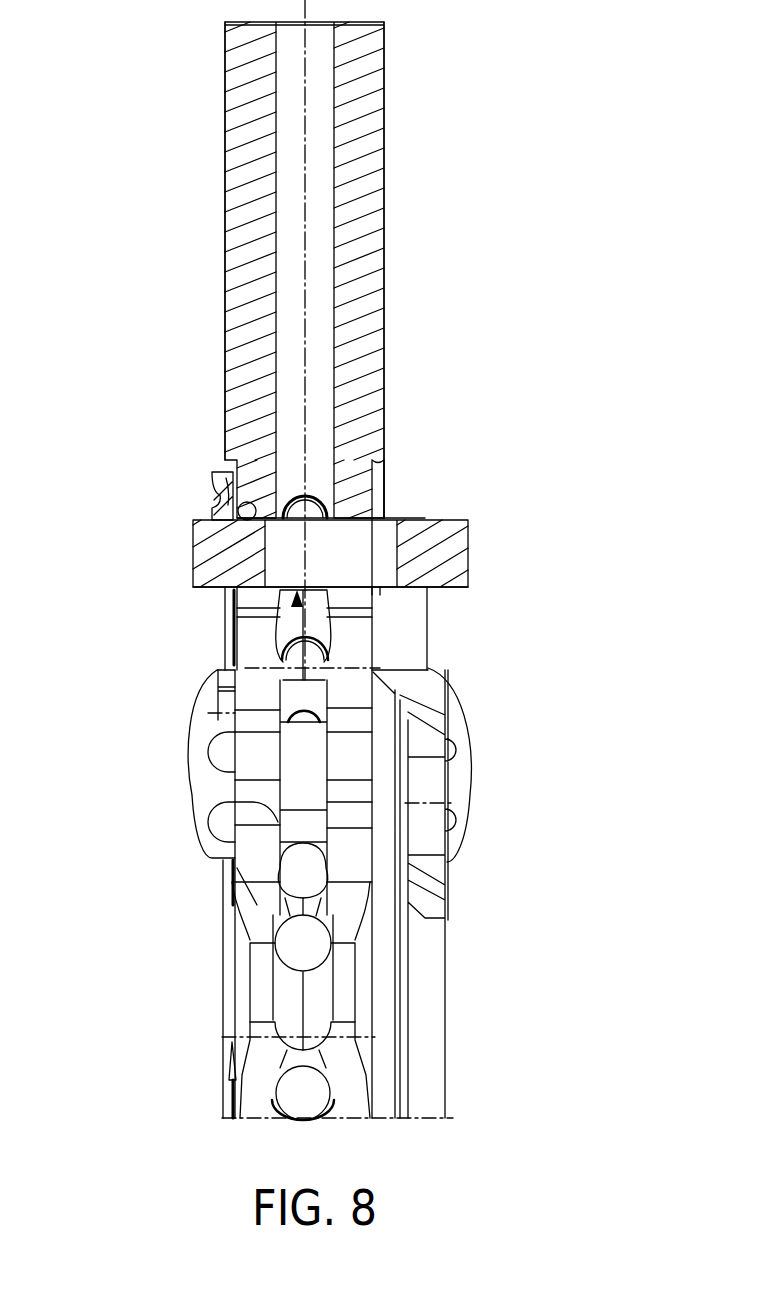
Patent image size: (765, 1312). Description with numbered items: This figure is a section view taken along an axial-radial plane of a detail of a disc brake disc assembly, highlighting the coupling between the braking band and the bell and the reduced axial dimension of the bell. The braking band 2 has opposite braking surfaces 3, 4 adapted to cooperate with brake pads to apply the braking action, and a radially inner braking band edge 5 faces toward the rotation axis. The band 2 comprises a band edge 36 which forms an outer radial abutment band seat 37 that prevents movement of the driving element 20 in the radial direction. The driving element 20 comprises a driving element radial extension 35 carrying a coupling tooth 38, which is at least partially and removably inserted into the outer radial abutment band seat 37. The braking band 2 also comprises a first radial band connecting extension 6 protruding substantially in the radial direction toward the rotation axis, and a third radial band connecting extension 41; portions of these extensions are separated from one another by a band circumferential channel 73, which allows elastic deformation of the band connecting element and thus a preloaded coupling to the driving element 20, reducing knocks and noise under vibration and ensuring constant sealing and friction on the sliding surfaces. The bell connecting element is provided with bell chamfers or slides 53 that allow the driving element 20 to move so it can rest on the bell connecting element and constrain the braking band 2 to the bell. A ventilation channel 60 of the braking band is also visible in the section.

The braking band 2 is at (355, 268).
The opposite braking surface 3 is at (217, 214).
The opposite braking surface 4 is at (385, 183).
The radially inner braking band edge 5 is at (377, 470).
The radial band connecting extension 6 is at (257, 602).
The driving element 20 is at (443, 533).
The driving element radial extension 35 is at (220, 562).
The band edge 36 is at (233, 533).
The outer radial abutment band seat 37 is at (225, 462).
The coupling tooth 38 is at (217, 492).
The third radial band connecting extension 41 is at (362, 600).
The bell chamfers or slides 53 is at (405, 518).
The ventilation channel 60 is at (330, 957).
The band circumferential channel 73 is at (278, 640).